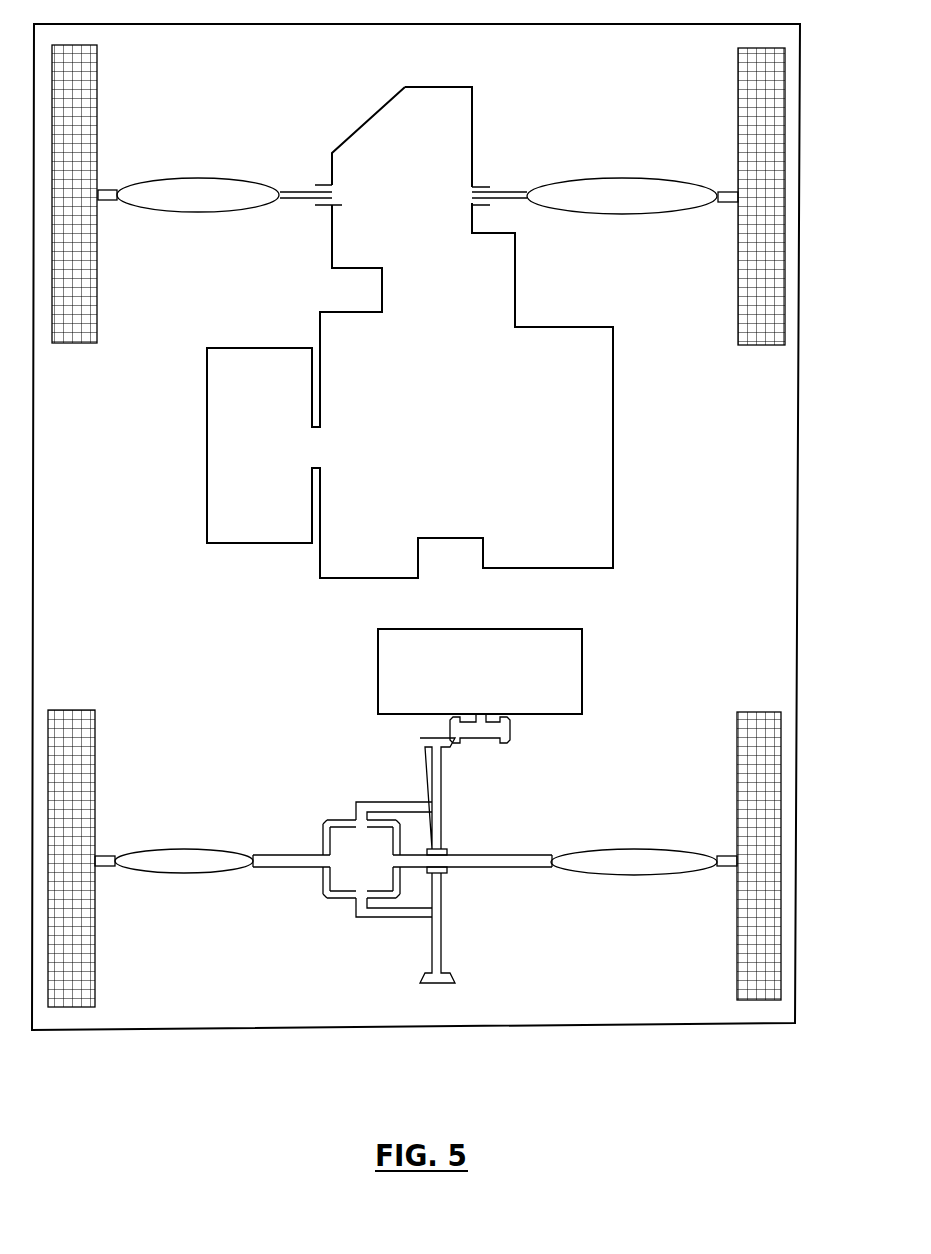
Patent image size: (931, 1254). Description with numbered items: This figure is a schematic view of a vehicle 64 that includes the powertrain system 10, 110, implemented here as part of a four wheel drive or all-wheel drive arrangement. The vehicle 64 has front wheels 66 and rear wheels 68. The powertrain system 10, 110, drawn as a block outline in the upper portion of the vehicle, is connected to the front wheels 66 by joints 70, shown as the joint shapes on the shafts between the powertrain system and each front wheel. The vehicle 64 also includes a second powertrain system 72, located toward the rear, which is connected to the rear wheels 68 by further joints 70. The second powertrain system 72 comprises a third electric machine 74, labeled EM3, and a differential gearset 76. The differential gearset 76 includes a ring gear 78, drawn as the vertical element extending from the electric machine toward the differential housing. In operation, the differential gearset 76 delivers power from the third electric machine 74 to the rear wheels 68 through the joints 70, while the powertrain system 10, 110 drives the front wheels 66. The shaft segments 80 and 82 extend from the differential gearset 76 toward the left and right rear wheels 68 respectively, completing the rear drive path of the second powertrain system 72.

The powertrain system 10 is at (613, 543).
The powertrain system 110 is at (461, 356).
The vehicle 64 is at (795, 968).
The front wheels 66 is at (77, 338).
The rear wheels 68 is at (70, 710).
The joints 70 is at (207, 200).
The second powertrain system 72 is at (248, 730).
The third electric machine 74 is at (582, 690).
The differential gearset 76 is at (374, 791).
The ring gear 78 is at (417, 968).
The left axle shaft 80 is at (272, 853).
The right axle shaft 82 is at (512, 853).